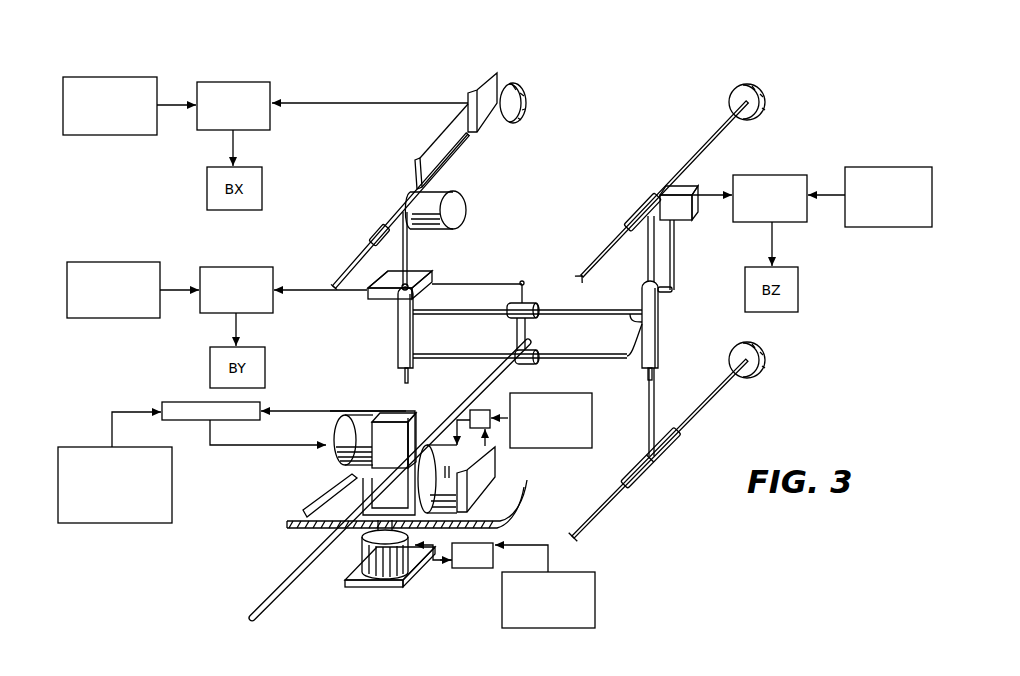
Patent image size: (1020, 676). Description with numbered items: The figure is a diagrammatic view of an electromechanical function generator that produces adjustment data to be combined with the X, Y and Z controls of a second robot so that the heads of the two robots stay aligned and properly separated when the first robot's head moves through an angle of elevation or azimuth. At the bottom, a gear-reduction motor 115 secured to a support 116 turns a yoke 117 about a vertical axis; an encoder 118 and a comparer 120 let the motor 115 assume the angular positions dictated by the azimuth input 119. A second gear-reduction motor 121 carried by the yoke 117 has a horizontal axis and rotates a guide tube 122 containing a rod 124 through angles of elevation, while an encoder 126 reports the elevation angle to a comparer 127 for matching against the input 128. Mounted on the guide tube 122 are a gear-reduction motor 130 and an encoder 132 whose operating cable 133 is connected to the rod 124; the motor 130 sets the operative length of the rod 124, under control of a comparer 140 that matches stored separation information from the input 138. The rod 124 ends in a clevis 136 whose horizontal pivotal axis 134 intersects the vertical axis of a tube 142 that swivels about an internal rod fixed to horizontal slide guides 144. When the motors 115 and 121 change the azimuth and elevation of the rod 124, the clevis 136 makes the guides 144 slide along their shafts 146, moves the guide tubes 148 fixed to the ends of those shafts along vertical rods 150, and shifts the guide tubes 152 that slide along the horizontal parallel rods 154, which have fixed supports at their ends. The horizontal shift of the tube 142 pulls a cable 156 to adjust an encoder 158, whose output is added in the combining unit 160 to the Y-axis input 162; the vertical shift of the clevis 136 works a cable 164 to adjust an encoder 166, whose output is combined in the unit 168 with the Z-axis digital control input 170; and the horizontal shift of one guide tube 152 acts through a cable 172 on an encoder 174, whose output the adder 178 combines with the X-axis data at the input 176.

The gear-reduction motor 115 is at (362, 552).
The support 116 is at (322, 487).
The yoke 117 is at (407, 504).
The encoder 118 is at (365, 582).
The azimuth input 119 is at (595, 588).
The comparer 120 is at (477, 568).
The gear-reduction motor 121 is at (447, 462).
The guide tube 122 is at (408, 408).
The rod 124 is at (272, 597).
The encoder 126 is at (490, 465).
The comparer 127 is at (480, 408).
The input 128 is at (593, 405).
The gear-reduction motor 130 is at (333, 460).
The encoder 132 is at (333, 425).
The operating cable 133 is at (303, 516).
The pivotal axis 134 is at (530, 331).
The clevis 136 is at (503, 350).
The input 138 is at (100, 517).
The comparer 140 is at (187, 402).
The tube 142 is at (513, 328).
The horizontal slide guides 144 is at (526, 303).
The shafts 146 is at (642, 328).
The guide tubes 148 is at (398, 329).
The vertical rods 150 is at (408, 247).
The guide tubes 152 is at (378, 227).
The horizontal parallel rods 154 is at (463, 146).
The cable 156 is at (492, 284).
The encoder 158 is at (380, 283).
The combining unit 160 is at (258, 267).
The input 162 is at (127, 262).
The cable 164 is at (674, 262).
The encoder 166 is at (690, 185).
The combining unit 168 is at (787, 175).
The digital control input 170 is at (917, 167).
The cable 172 is at (446, 141).
The encoder 174 is at (494, 74).
The input 176 is at (138, 77).
The adder 178 is at (248, 82).